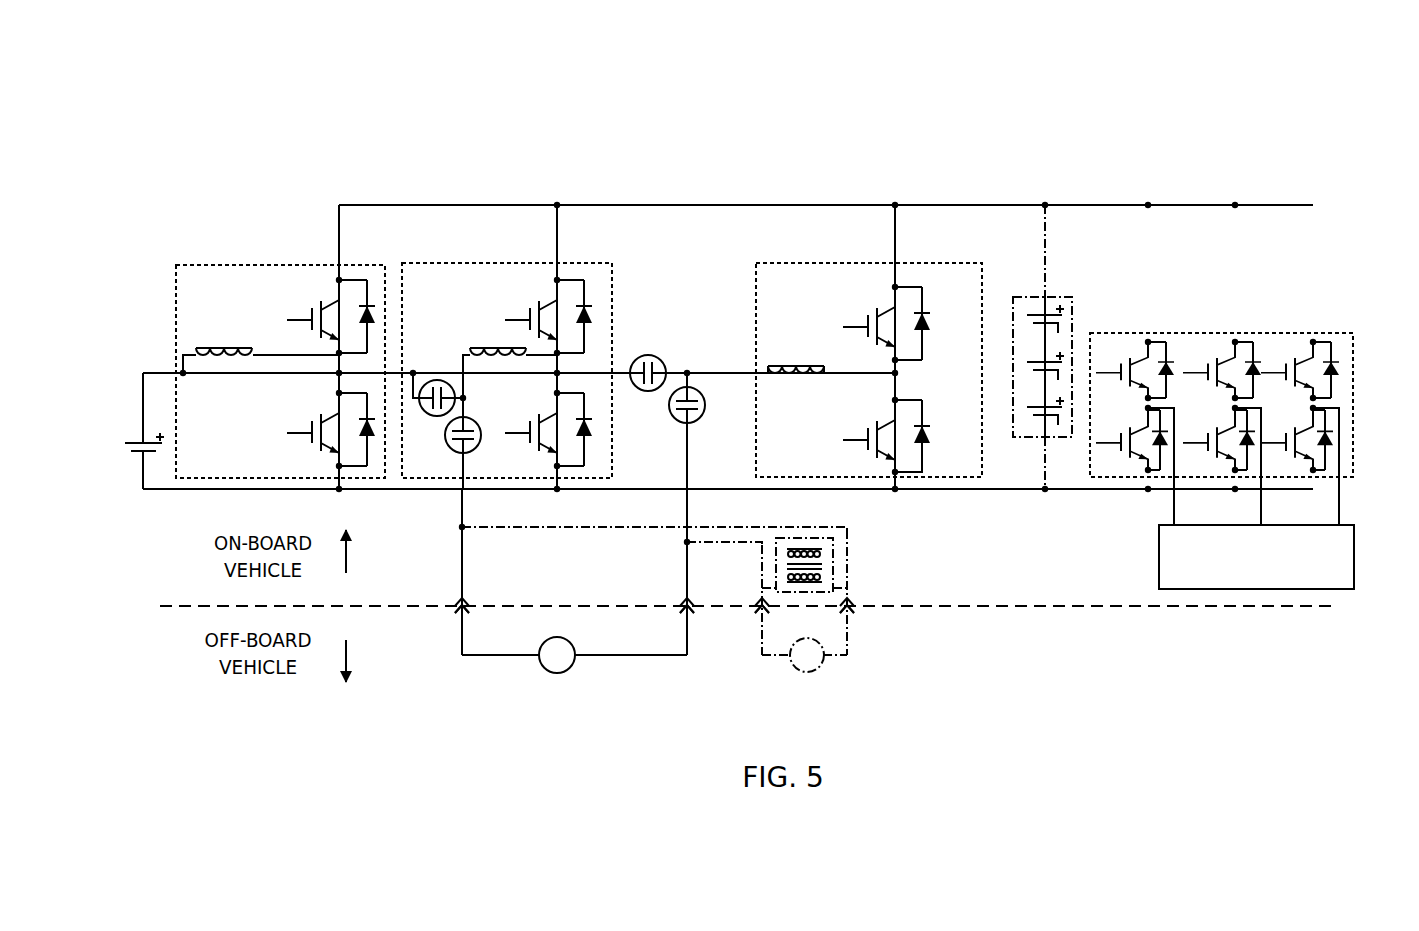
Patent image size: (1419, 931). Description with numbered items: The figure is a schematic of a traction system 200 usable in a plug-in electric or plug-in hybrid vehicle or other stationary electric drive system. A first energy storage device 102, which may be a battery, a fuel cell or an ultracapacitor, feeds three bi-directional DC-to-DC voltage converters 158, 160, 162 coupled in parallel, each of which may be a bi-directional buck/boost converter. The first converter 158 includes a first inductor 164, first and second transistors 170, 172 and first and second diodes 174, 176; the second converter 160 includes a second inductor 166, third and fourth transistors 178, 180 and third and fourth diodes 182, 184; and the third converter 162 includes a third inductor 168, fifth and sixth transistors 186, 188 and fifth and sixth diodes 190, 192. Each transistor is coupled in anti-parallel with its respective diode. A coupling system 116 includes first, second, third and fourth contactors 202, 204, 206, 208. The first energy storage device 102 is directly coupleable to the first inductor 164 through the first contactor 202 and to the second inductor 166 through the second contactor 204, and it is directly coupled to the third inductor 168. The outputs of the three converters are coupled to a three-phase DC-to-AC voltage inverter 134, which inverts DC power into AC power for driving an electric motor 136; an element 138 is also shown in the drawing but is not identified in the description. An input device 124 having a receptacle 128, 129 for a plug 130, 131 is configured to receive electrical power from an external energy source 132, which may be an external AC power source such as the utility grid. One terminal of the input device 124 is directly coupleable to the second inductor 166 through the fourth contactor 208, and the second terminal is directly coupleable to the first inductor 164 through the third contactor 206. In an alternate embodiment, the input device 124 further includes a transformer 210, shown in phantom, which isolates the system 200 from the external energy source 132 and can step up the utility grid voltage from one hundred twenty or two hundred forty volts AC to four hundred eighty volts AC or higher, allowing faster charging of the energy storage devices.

The traction system 200 is at (823, 176).
The first energy storage device 102 is at (143, 437).
The coupling system 116 is at (476, 403).
The third bi-directional DC-to-DC voltage converter 162 is at (198, 265).
The second bi-directional DC-to-DC voltage converter 160 is at (443, 263).
The first bi-directional DC-to-DC voltage converter 158 is at (771, 263).
The third inductor 168 is at (206, 348).
The second inductor 166 is at (466, 347).
The first inductor 164 is at (778, 365).
The fifth transistor 186 is at (290, 322).
The sixth transistor 188 is at (290, 434).
The third transistor 178 is at (523, 322).
The fourth transistor 180 is at (518, 433).
The first transistor 170 is at (858, 328).
The second transistor 172 is at (858, 440).
The fifth diode 190 is at (372, 318).
The sixth diode 192 is at (370, 438).
The third diode 182 is at (590, 318).
The fourth diode 184 is at (592, 438).
The first diode 174 is at (930, 326).
The second diode 176 is at (930, 440).
The first contactor 202 is at (660, 356).
The second contactor 204 is at (437, 380).
The third contactor 206 is at (704, 415).
The fourth contactor 208 is at (446, 424).
The DC link capacitor bank 138 is at (1018, 440).
The three-phase DC-to-AC voltage inverter 134 is at (1113, 333).
The electric motor 136 is at (1354, 572).
The receptacle 128 is at (460, 604).
The receptacle 129 is at (684, 604).
The electrical plug 130 is at (460, 612).
The electrical plug 131 is at (684, 612).
The external energy source 132 is at (557, 673).
The input device 124 is at (750, 673).
The transformer 210 is at (835, 550).